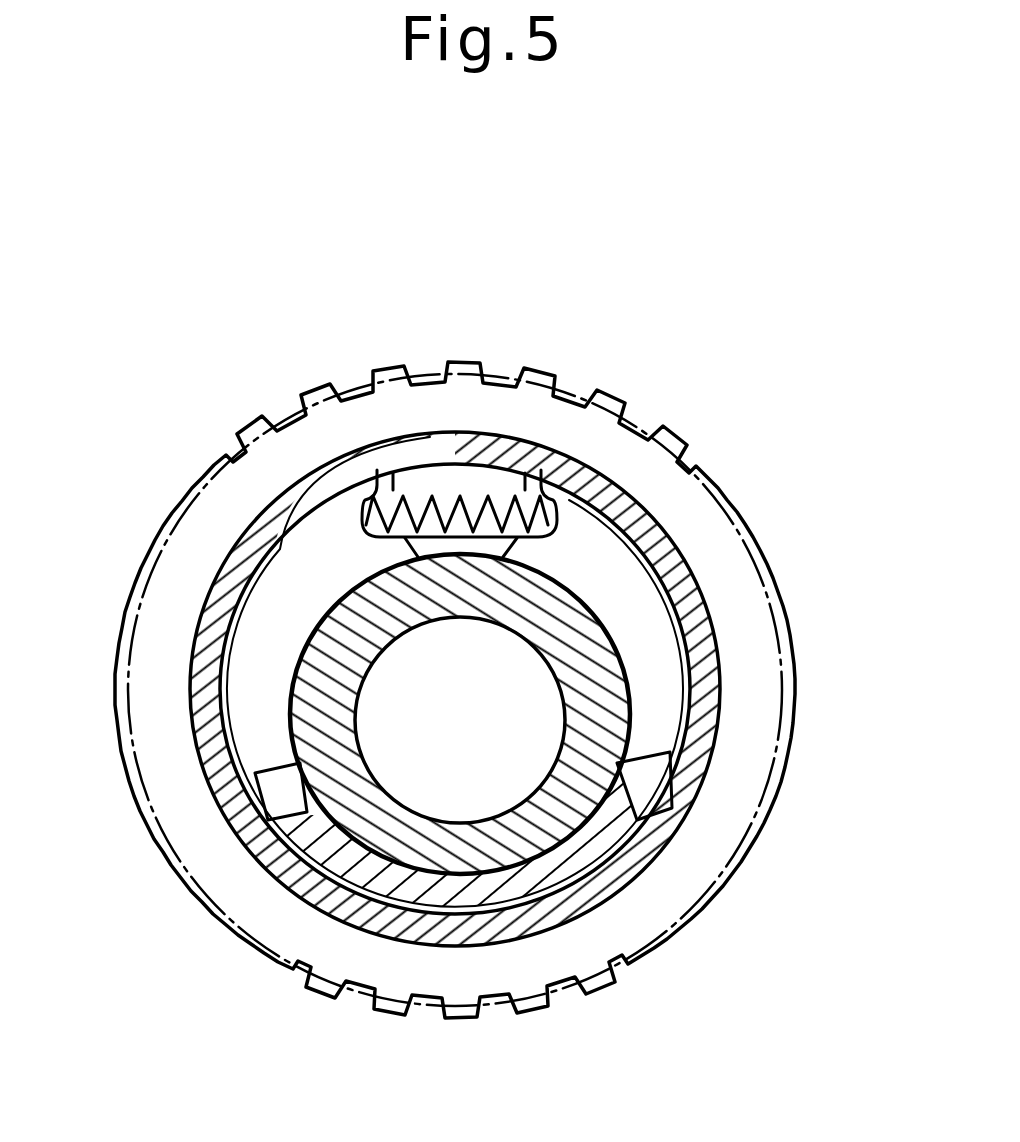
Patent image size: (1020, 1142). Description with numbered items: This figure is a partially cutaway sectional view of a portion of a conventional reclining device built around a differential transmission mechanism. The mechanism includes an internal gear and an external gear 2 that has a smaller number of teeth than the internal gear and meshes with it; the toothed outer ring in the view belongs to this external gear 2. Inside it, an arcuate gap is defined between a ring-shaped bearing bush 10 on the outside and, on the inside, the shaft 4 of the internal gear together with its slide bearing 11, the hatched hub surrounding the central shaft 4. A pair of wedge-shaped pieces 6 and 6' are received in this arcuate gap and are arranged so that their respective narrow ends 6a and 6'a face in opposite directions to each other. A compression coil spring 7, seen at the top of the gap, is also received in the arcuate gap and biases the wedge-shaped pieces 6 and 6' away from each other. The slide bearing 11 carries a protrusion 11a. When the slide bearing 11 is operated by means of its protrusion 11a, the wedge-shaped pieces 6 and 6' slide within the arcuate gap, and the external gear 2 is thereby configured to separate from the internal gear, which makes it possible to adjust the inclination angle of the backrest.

The external gear 2 is at (723, 562).
The shaft 4 is at (498, 737).
The wedge-shaped piece 6 is at (421, 668).
The wedge-shaped piece 6' is at (626, 678).
The narrow end 6a is at (272, 808).
The narrow end 6'a is at (713, 855).
The compression coil spring 7 is at (447, 497).
The ring-shaped bearing bush 10 is at (717, 725).
The slide bearing 11 is at (598, 672).
The protrusion 11a is at (392, 882).